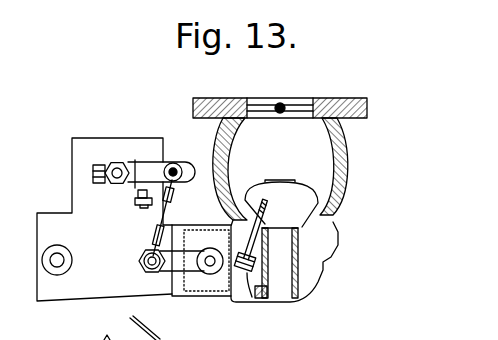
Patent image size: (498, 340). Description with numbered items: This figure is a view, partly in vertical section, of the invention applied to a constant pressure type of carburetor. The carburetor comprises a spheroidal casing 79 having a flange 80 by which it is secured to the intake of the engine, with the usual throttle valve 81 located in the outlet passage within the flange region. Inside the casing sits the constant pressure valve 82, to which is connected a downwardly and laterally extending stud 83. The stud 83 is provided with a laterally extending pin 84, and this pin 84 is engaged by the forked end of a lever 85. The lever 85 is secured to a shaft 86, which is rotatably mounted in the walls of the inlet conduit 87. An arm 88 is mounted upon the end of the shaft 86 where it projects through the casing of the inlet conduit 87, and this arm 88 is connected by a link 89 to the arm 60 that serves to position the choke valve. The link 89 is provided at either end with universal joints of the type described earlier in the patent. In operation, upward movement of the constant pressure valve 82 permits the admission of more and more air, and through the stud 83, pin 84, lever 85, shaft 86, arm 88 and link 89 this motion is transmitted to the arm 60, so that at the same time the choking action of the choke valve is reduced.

The arm 60 is at (156, 163).
The spheroidal casing 79 is at (343, 158).
The flange 80 is at (348, 98).
The throttle valve 81 is at (284, 104).
The constant pressure valve 82 is at (302, 190).
The stud 83 is at (255, 247).
The pin 84 is at (257, 284).
The lever 85 is at (243, 275).
The shaft 86 is at (211, 265).
The inlet conduit 87 is at (212, 226).
The arm 88 is at (173, 262).
The link 89 is at (160, 214).